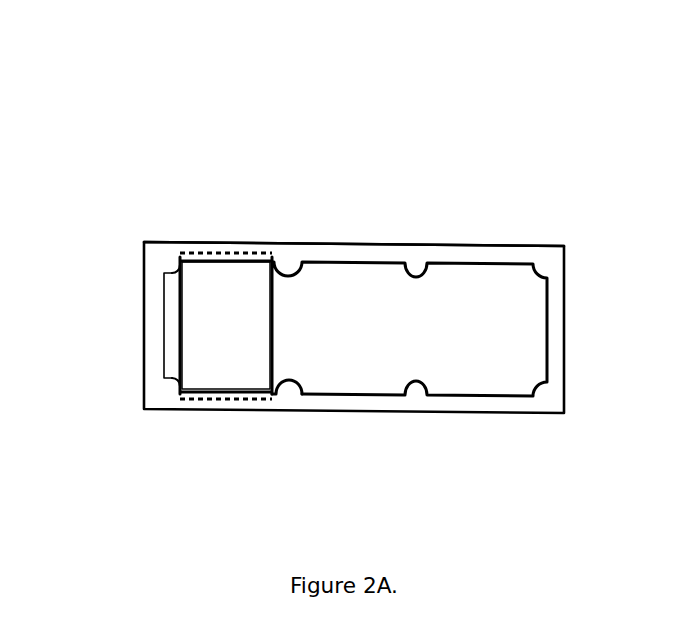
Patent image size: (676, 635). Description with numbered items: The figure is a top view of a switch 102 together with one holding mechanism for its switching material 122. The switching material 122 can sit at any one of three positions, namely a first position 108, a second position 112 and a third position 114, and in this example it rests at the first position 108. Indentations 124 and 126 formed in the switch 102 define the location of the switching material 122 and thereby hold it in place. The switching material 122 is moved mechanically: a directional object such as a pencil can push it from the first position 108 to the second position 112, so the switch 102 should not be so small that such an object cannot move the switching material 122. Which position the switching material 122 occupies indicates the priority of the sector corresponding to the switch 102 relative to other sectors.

The switch 102 is at (331, 142).
The first position 108 is at (220, 242).
The second position 112 is at (350, 241).
The third position 114 is at (483, 245).
The switching material 122 is at (202, 340).
The indentation 124 is at (287, 385).
The indentation 126 is at (173, 380).